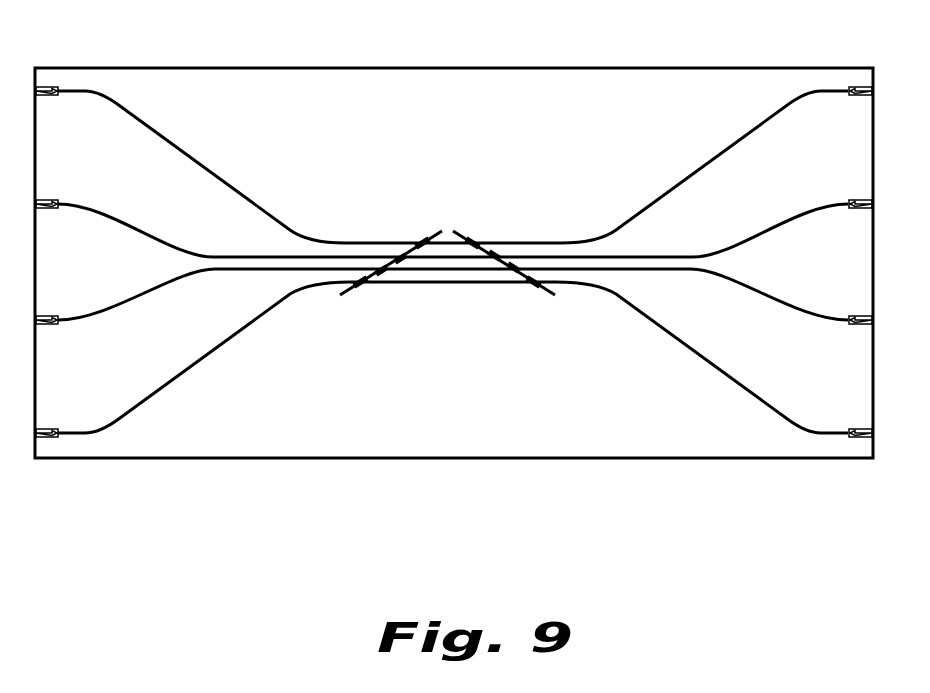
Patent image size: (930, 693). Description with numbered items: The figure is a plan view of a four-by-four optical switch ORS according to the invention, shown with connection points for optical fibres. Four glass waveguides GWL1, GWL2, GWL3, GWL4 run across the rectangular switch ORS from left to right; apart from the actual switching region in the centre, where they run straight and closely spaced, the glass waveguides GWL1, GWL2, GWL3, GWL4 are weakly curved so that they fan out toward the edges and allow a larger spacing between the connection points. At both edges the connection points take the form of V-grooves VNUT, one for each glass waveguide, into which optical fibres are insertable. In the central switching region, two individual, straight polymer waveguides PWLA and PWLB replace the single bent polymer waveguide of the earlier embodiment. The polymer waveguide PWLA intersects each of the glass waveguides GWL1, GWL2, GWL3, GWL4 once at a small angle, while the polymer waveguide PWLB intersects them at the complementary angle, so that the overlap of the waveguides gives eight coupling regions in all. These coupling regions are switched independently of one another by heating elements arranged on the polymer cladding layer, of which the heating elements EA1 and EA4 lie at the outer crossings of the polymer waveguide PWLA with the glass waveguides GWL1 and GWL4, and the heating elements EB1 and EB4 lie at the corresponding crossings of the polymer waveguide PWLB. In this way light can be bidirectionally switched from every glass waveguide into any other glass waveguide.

The switch ORS is at (529, 50).
The V-grooves VNUT is at (48, 84).
The glass waveguide GWL1 is at (183, 377).
The glass waveguide GWL2 is at (115, 312).
The glass waveguide GWL3 is at (127, 228).
The glass waveguide GWL4 is at (188, 153).
The polymer waveguide PWLA is at (442, 228).
The polymer waveguide PWLB is at (455, 230).
The heating element EA1 is at (360, 282).
The heating element EA4 is at (422, 238).
The heating element EB1 is at (538, 288).
The heating element EB4 is at (473, 242).